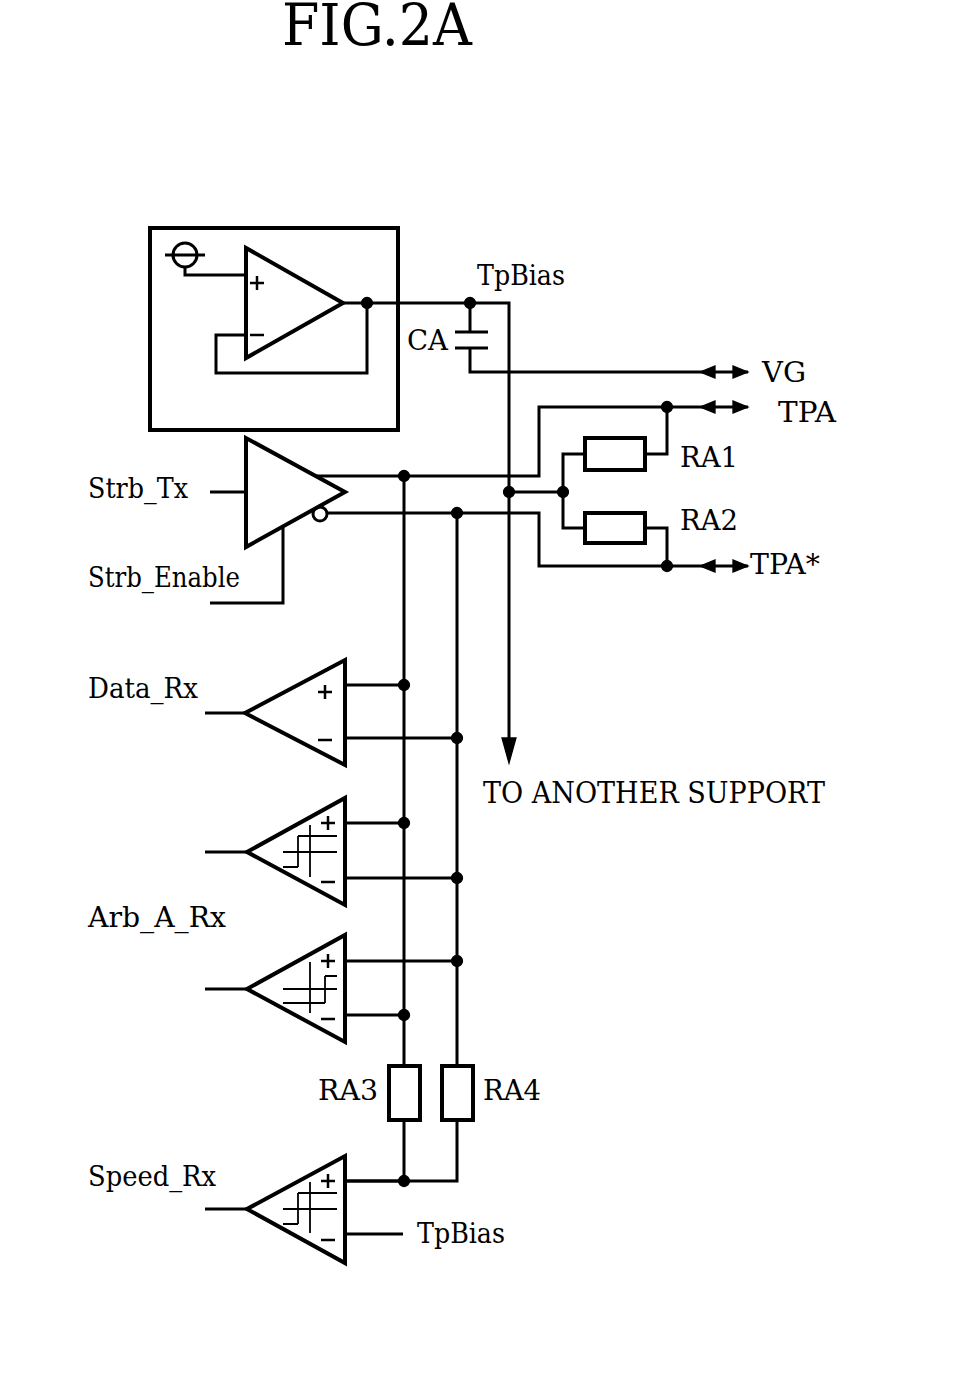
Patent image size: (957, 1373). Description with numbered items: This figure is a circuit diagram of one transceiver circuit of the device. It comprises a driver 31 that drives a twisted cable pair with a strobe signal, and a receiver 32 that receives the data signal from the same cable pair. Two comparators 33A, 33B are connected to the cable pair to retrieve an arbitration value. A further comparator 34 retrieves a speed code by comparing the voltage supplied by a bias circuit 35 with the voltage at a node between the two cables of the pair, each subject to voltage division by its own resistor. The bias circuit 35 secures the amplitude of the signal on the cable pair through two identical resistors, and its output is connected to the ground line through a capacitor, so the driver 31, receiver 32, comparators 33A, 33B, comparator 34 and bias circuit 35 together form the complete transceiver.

The bias circuit 35 is at (150, 365).
The driver 31 is at (296, 524).
The data receiver comparator 32 is at (292, 687).
The comparator 33A is at (288, 822).
The comparator 33B is at (278, 1005).
The comparator 34 is at (280, 1225).